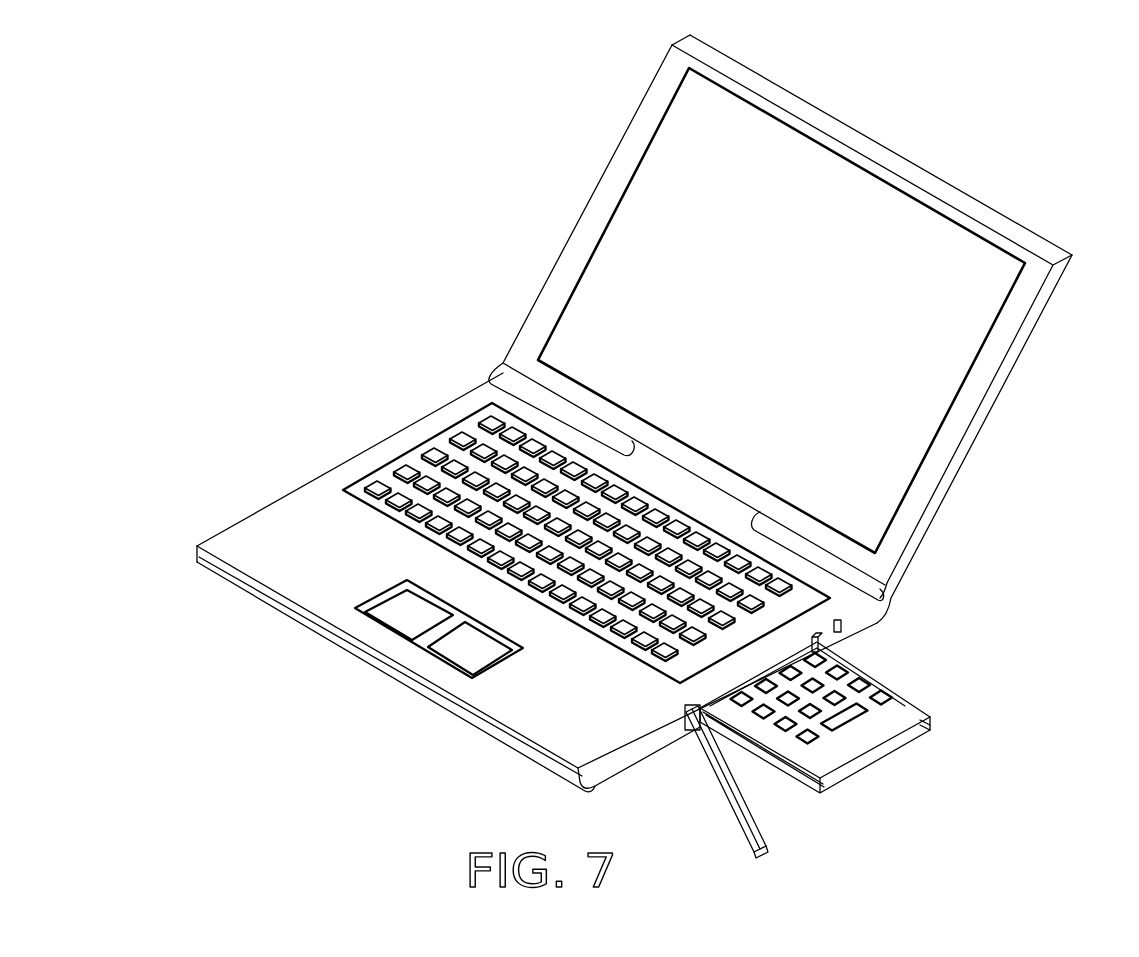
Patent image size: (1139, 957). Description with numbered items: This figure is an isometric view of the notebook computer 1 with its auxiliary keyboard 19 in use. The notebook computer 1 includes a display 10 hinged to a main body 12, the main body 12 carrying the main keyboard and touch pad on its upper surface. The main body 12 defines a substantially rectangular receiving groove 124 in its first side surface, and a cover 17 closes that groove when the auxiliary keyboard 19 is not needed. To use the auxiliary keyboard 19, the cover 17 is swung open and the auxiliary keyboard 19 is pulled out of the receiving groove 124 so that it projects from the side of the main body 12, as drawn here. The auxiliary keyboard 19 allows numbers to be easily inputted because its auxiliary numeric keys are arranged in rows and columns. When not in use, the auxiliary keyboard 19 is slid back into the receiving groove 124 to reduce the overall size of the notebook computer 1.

The notebook computer 1 is at (360, 197).
The display 10 is at (935, 237).
The main body 12 is at (535, 723).
The receiving groove 124 is at (838, 630).
The auxiliary keyboard 19 is at (908, 715).
The cover 17 is at (735, 805).